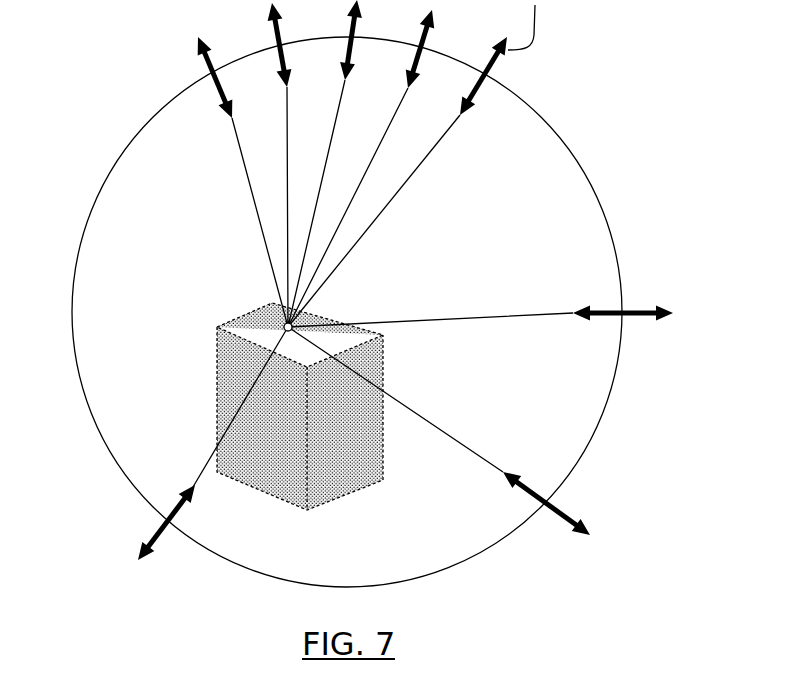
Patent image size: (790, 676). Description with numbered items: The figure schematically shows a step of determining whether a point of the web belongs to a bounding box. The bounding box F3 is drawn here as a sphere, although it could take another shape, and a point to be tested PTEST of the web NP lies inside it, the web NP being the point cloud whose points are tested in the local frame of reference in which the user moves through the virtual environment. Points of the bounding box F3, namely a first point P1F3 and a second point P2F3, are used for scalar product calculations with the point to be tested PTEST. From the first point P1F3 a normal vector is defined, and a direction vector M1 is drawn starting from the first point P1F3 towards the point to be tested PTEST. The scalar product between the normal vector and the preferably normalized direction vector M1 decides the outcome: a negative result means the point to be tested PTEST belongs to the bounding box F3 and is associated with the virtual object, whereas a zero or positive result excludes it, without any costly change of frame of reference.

The bounding box F3 is at (126, 151).
The web NP is at (209, 401).
The direction vector M1 is at (480, 93).
The point to be tested PTEST is at (283, 323).
The first point of the bounding box P1F3 is at (490, 78).
The second point of the bounding box P2F3 is at (622, 312).